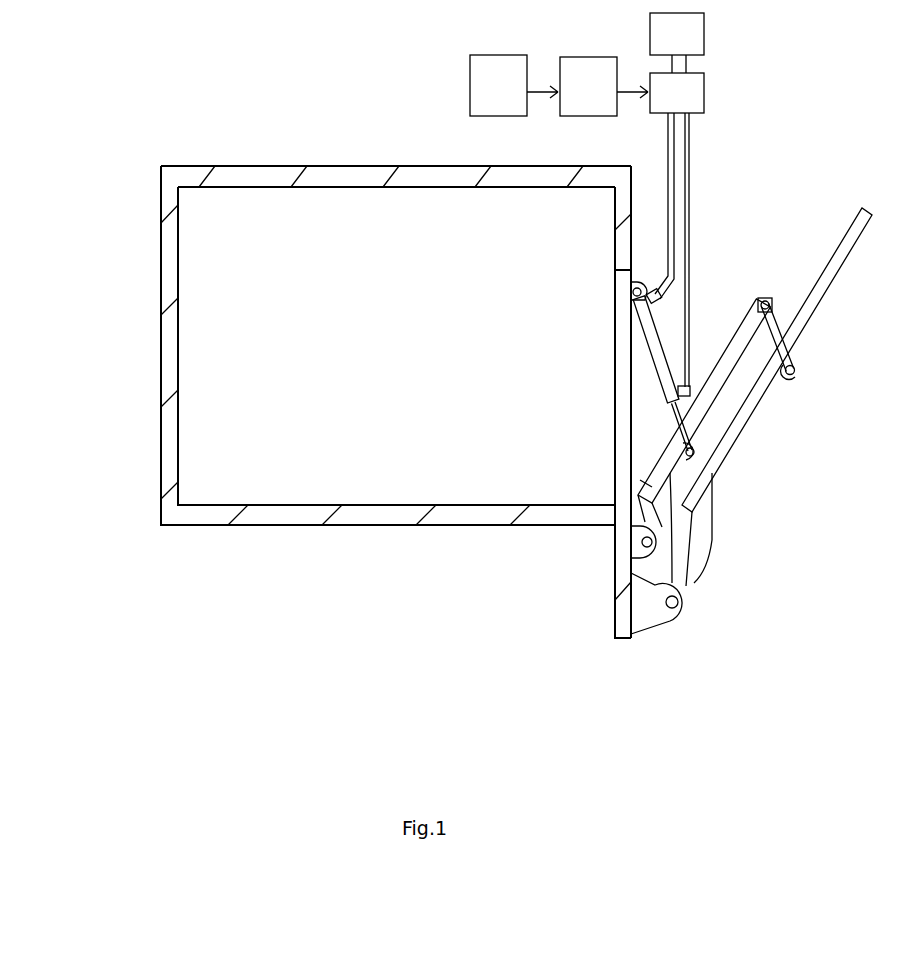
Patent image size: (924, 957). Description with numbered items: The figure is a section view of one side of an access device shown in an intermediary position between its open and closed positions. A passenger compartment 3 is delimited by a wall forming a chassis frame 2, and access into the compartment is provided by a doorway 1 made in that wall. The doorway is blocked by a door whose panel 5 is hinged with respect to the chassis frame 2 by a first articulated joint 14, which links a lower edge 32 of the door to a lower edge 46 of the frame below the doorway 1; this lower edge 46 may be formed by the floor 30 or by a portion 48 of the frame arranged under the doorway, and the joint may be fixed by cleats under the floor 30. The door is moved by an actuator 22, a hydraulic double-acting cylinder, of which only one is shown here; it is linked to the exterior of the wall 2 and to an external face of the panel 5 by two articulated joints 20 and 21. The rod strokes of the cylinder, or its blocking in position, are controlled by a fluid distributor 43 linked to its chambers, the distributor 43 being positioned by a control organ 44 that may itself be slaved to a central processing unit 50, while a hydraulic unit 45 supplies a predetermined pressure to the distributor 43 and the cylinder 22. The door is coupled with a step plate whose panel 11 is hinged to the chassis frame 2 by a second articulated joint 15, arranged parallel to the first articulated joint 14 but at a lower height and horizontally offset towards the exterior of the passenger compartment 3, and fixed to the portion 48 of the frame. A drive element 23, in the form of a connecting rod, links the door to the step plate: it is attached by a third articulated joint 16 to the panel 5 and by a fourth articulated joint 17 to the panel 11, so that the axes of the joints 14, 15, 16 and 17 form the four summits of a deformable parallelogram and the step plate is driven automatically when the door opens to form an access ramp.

The doorway 1 is at (603, 348).
The chassis frame 2 is at (275, 172).
The passenger compartment 3 is at (245, 404).
The panel 5 is at (740, 327).
The panel 11 is at (852, 240).
The first articulated joint 14 is at (639, 553).
The second articulated joint 15 is at (684, 611).
The third articulated joint 16 is at (765, 300).
The fourth articulated joint 17 is at (796, 373).
The articulated joint 20 is at (633, 290).
The articulated joint 21 is at (686, 450).
The actuator 22 is at (657, 365).
The drive element 23 is at (779, 337).
The floor 30 is at (362, 515).
The lower edge 32 is at (643, 474).
The fluid distributor 43 is at (660, 225).
The control organ 44 is at (572, 86).
The hydraulic unit 45 is at (677, 34).
The lower edge 46 is at (604, 549).
The portion 48 is at (617, 618).
The central processing unit 50 is at (498, 85).